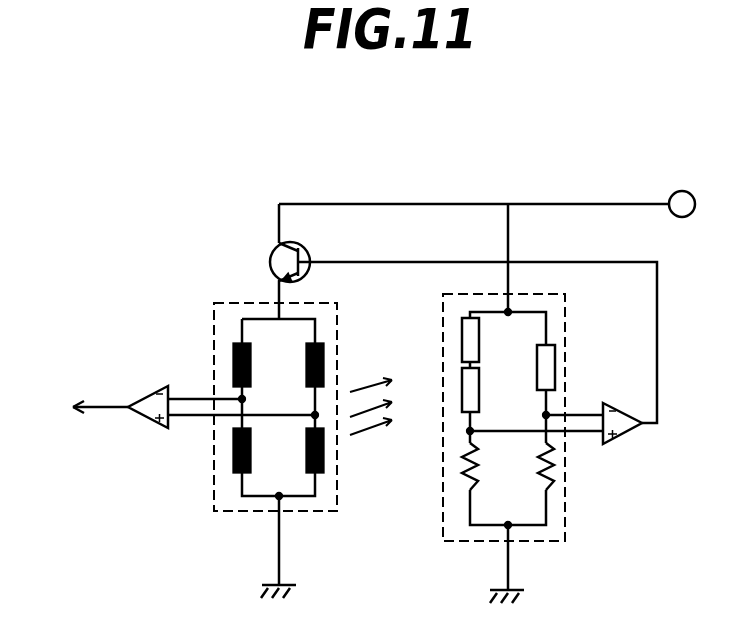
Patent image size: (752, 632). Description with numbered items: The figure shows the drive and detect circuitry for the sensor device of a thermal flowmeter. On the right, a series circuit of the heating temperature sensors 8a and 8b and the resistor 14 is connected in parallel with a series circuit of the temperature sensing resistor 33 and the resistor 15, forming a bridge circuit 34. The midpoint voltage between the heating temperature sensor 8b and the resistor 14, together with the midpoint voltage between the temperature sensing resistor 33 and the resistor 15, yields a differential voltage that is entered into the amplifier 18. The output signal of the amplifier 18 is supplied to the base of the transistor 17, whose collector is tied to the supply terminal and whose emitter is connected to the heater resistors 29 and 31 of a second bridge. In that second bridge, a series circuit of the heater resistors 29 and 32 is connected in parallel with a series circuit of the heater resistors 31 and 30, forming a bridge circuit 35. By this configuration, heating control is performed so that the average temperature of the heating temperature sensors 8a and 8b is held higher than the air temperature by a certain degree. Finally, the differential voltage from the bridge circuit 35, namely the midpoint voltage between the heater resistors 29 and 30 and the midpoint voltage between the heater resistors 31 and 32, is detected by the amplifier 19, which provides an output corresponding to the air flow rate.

The transistor 17 is at (270, 262).
The heater resistor 29 is at (233, 357).
The heater resistor 31 is at (324, 362).
The heater resistor 32 is at (233, 459).
The heater resistor 30 is at (324, 459).
The bridge circuit 35 is at (237, 511).
The amplifier 19 is at (148, 416).
The heating temperature sensor 8a is at (462, 340).
The heating temperature sensor 8b is at (462, 398).
The temperature sensing resistor 33 is at (555, 362).
The resistor 14 is at (463, 472).
The resistor 15 is at (554, 469).
The bridge circuit 34 is at (465, 541).
The amplifier 18 is at (620, 437).